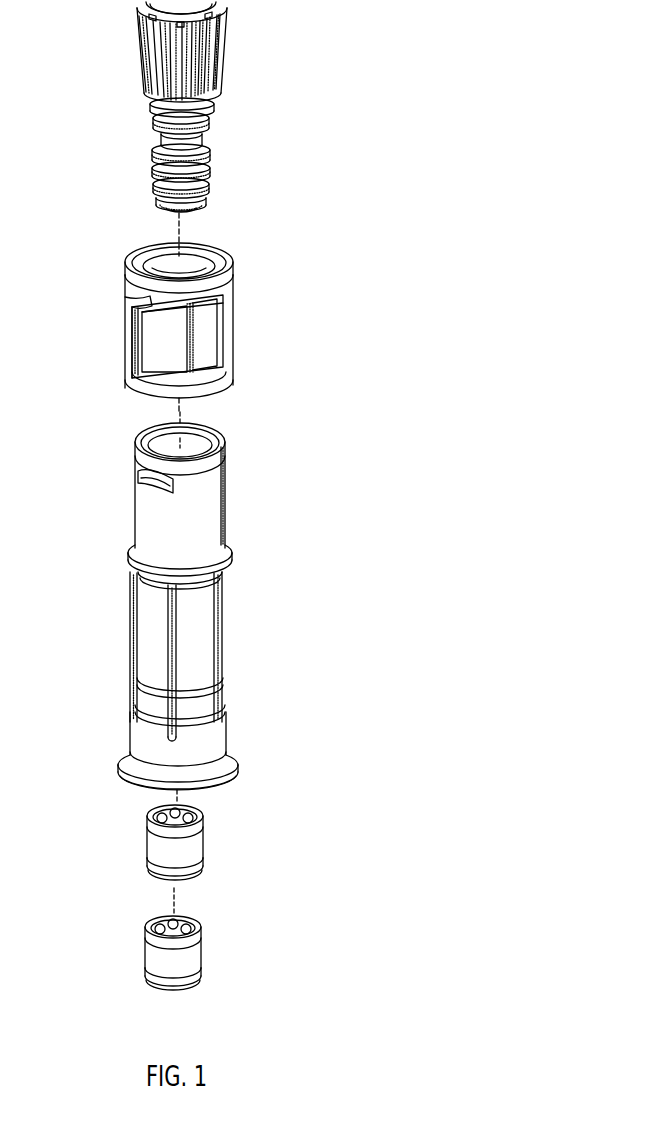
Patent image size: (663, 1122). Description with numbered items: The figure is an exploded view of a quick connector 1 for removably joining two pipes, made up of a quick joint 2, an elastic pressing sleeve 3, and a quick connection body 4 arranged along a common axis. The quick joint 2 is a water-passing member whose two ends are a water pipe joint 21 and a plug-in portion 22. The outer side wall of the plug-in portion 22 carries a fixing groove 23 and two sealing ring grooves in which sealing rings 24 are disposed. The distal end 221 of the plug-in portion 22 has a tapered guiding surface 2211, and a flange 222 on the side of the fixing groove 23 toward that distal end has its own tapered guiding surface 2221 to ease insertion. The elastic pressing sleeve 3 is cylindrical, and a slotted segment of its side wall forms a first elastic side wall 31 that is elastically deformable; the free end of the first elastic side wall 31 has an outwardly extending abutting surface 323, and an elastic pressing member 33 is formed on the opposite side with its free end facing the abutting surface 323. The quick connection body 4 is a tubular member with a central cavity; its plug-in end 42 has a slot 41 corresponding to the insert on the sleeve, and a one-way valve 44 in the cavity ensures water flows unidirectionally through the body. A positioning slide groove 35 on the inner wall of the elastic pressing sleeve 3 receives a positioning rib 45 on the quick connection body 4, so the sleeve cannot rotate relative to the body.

The quick connector 1 is at (453, 15).
The quick joint 2 is at (280, 19).
The water pipe joint 21 is at (215, 51).
The plug-in portion 22 is at (242, 168).
The distal end 221 is at (155, 201).
The tapered guiding surface 2211 is at (207, 208).
The flange 222 is at (154, 117).
The tapered guiding surface 2221 is at (160, 140).
The fixing groove 23 is at (208, 114).
The sealing rings 24 is at (153, 193).
The elastic pressing sleeve 3 is at (280, 302).
The first elastic side wall 31 is at (127, 303).
The abutting surface 323 is at (128, 327).
The elastic pressing member 33 is at (207, 332).
The positioning slide groove 35 is at (230, 272).
The quick connection body 4 is at (274, 558).
The slot 41 is at (136, 477).
The plug-in end 42 is at (143, 434).
The one-way valve 44 is at (198, 923).
The positioning rib 45 is at (229, 483).